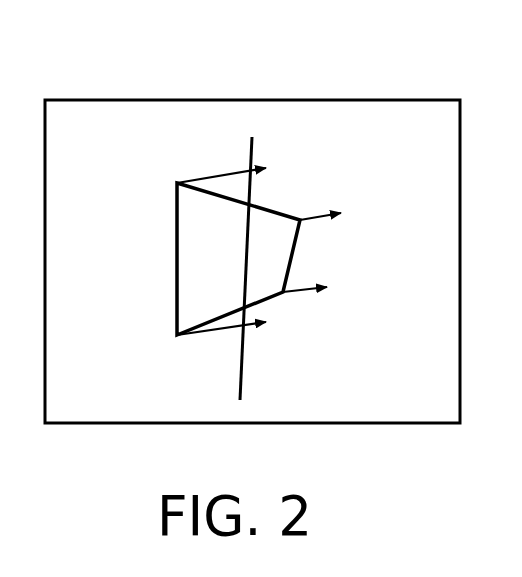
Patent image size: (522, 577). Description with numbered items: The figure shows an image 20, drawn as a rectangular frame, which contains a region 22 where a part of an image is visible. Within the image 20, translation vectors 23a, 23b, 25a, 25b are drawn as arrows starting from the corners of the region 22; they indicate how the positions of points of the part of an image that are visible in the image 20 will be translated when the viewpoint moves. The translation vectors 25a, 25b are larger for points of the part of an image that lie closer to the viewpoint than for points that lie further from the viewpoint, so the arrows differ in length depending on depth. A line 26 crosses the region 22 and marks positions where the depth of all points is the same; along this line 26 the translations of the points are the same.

The image 20 is at (350, 100).
The region 22 is at (177, 260).
The translation vector 23a is at (318, 215).
The translation vector 23b is at (299, 291).
The translation vector 25a is at (213, 176).
The translation vector 25b is at (212, 332).
The line 26 is at (242, 383).